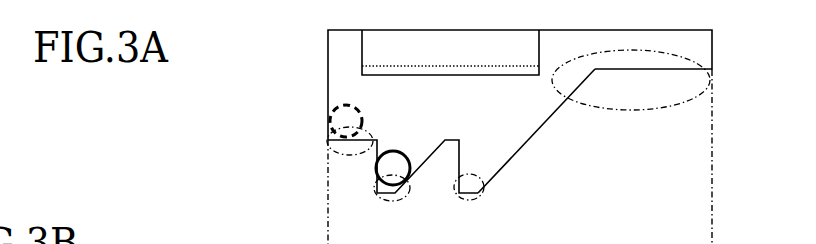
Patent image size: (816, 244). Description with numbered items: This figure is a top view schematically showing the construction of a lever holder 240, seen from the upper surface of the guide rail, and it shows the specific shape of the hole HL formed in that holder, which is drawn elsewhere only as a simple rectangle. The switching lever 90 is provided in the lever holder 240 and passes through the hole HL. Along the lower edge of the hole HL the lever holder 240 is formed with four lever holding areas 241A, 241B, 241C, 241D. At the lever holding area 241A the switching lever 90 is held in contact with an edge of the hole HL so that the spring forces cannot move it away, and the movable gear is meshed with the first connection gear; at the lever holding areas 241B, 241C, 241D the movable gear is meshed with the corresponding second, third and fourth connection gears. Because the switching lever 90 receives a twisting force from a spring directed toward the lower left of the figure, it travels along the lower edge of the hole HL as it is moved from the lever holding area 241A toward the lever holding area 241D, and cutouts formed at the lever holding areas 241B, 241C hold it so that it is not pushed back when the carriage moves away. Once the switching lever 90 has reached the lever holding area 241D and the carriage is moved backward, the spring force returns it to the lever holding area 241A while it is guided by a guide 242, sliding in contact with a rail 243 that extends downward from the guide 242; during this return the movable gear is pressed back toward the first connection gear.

The lever holder 240 is at (547, 140).
The lever holding area 241A is at (347, 155).
The lever holding area 241B is at (407, 197).
The lever holding area 241C is at (483, 197).
The lever holding area 241D is at (631, 110).
The guide 242 is at (362, 39).
The rail 243 is at (428, 66).
The switching lever 90 is at (408, 148).
The hole HL is at (517, 112).